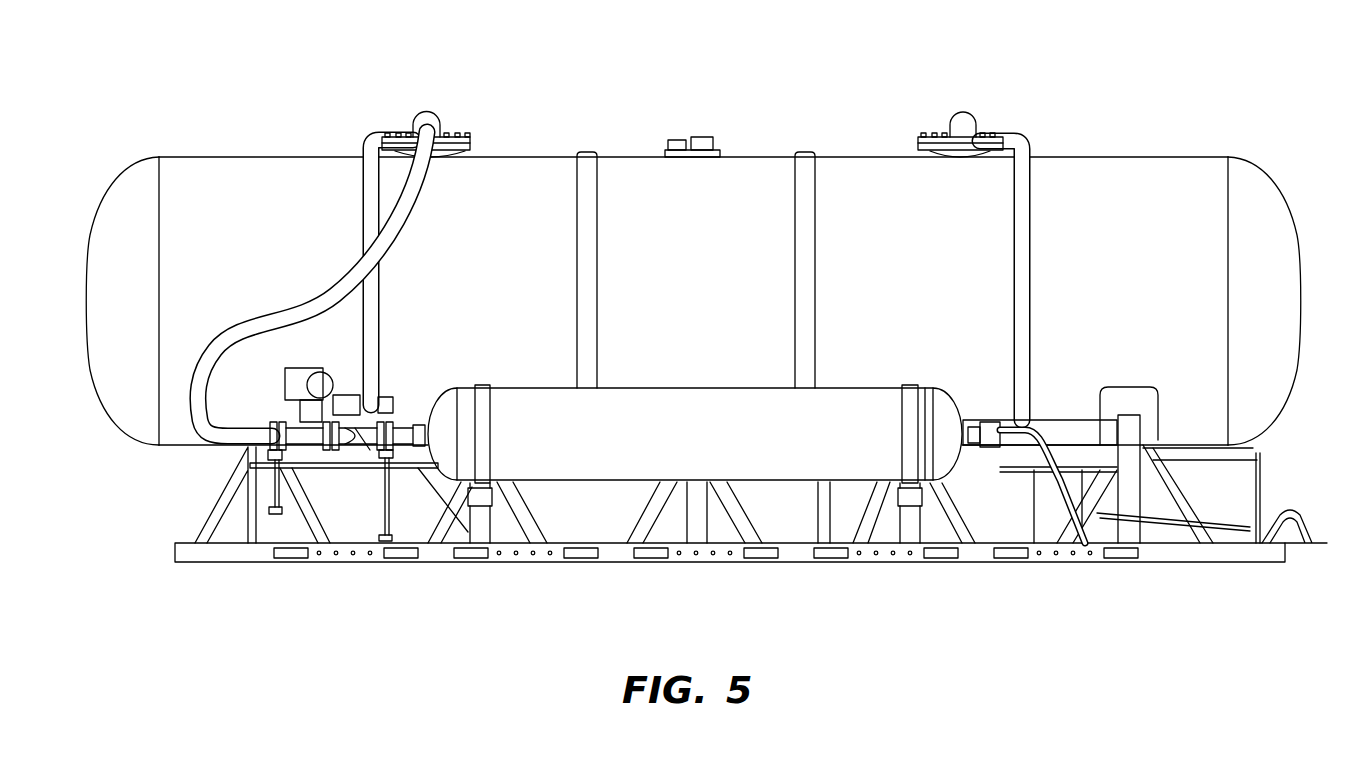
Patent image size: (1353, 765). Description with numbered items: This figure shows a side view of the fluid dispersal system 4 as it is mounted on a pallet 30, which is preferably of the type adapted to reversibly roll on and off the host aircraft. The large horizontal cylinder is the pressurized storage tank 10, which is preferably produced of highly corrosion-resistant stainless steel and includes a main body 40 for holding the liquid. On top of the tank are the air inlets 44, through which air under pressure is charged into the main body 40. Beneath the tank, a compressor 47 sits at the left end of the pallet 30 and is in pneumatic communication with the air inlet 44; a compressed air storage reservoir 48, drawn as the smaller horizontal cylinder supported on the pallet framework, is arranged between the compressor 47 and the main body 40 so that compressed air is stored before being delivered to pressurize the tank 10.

The system 4 is at (706, 336).
The storage tank 10 is at (1178, 177).
The pallet 30 is at (467, 562).
The main body 40 is at (122, 187).
The air inlet 44 is at (399, 130).
The compressor 47 is at (353, 458).
The compressed air storage reservoir 48 is at (624, 467).